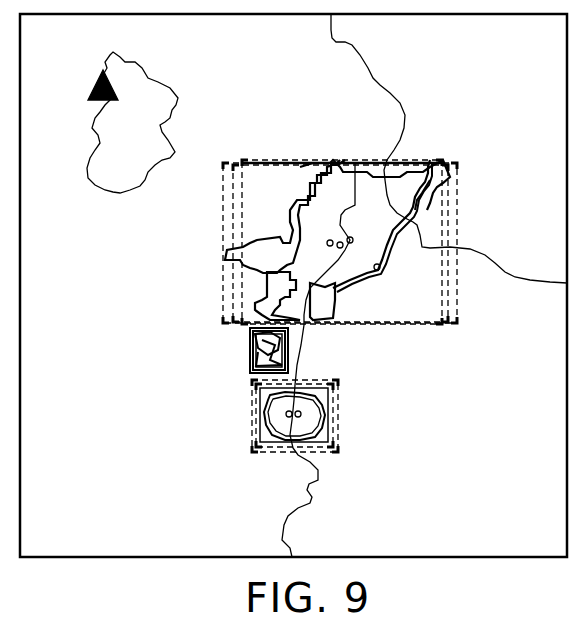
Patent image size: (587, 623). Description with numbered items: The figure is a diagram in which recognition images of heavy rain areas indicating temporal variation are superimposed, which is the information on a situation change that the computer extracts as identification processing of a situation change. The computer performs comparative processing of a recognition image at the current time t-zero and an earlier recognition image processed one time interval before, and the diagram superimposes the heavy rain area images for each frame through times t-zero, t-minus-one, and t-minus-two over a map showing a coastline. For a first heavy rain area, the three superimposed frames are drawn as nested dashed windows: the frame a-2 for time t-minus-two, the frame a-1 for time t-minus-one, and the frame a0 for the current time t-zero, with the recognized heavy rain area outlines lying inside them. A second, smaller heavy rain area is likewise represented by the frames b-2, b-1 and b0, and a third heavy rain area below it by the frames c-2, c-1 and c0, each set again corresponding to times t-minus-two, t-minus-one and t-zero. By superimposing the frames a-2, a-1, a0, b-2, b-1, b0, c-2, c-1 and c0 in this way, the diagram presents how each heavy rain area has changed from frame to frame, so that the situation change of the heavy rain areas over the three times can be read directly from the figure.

The heavy rain area image frame at time t-2 a-2 is at (457, 262).
The heavy rain area image frame at time t-1 a-1 is at (448, 288).
The heavy rain area image frame at time t0 a0 is at (442, 316).
The heavy rain area image frame at time t-2 b-2 is at (288, 342).
The heavy rain area image frame at time t-1 b-1 is at (250, 342).
The heavy rain area image frame at time t0 b0 is at (252, 366).
The heavy rain area image frame at time t-2 c-2 is at (270, 452).
The heavy rain area image frame at time t-1 c-1 is at (322, 452).
The heavy rain area image frame at time t0 c0 is at (290, 452).